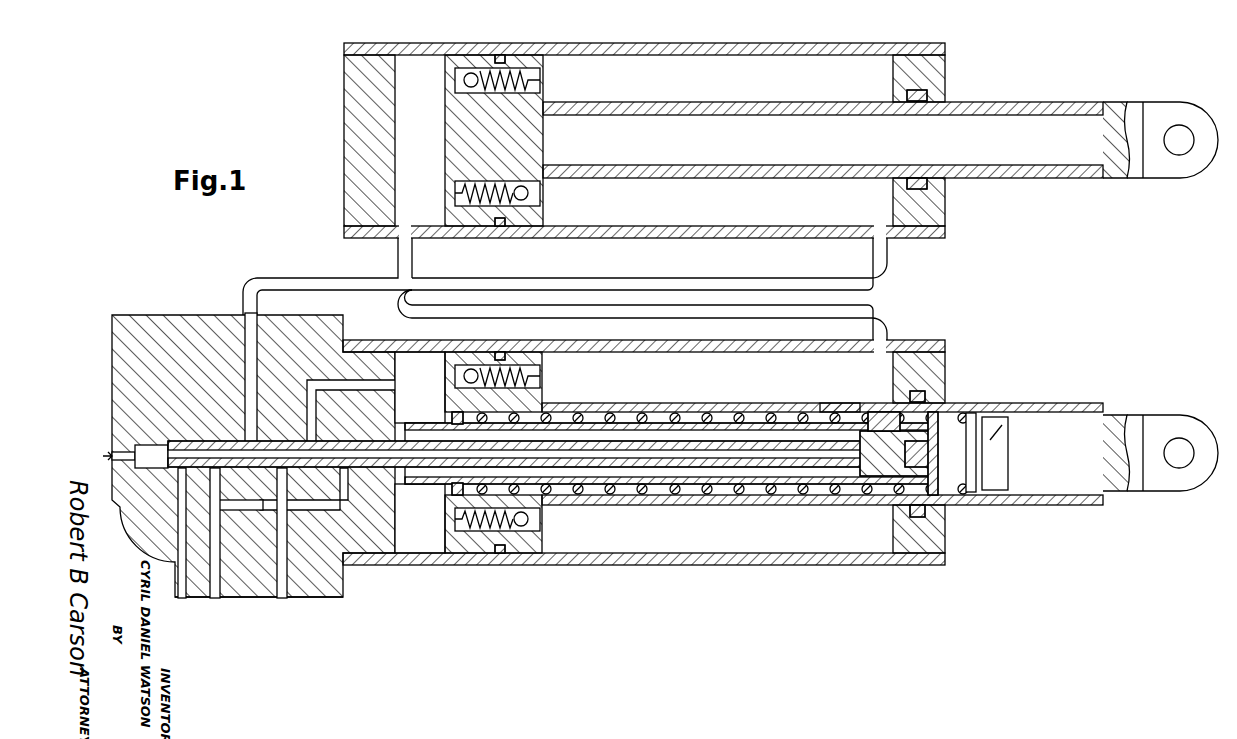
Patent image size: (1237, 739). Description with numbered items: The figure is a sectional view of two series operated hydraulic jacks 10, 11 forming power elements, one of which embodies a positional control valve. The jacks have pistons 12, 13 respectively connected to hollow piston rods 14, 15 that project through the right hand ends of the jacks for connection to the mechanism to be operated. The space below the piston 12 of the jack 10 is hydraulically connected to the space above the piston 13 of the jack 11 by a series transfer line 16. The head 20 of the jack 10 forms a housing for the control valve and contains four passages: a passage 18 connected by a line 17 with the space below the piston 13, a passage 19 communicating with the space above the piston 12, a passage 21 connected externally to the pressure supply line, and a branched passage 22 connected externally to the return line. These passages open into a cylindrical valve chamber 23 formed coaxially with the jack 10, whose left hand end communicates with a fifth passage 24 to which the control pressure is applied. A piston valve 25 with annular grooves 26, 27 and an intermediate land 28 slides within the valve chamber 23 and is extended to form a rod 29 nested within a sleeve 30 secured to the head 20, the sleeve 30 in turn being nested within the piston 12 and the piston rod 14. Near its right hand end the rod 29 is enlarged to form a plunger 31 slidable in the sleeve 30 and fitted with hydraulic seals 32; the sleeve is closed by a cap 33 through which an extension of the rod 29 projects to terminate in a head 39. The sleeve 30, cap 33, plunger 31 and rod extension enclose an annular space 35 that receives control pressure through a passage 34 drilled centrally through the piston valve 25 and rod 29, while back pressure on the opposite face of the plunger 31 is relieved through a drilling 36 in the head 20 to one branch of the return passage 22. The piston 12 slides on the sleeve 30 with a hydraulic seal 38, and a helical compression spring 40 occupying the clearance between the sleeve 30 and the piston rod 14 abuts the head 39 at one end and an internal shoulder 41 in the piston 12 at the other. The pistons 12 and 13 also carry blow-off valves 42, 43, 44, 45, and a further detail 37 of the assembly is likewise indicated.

The jack 10 is at (760, 566).
The jack 11 is at (646, 151).
The piston 12 is at (462, 402).
The piston 13 is at (447, 104).
The hollow piston rod 14 is at (1032, 498).
The hollow piston rod 15 is at (1008, 180).
The series transfer line 16 is at (888, 321).
The line 17 is at (888, 264).
The passage 18 is at (245, 342).
The passage 19 is at (355, 385).
The head 20 is at (200, 600).
The passage 21 is at (282, 598).
The branched passage 22 is at (216, 598).
The cylindrical valve chamber 23 is at (151, 456).
The fifth passage 24 is at (110, 455).
The piston valve 25 is at (180, 598).
The annular groove 26 is at (228, 470).
The annular groove 27 is at (320, 508).
The intermediate land 28 is at (253, 456).
The rod 29 is at (742, 490).
The sleeve 30 is at (603, 480).
The plunger 31 is at (879, 408).
The hydraulic seals 32 is at (870, 498).
The cap 33 is at (895, 492).
The passage 34 is at (635, 452).
The annular space 35 is at (945, 418).
The drilling 36 is at (420, 518).
The rod wall 37 is at (835, 404).
The hydraulic seal 38 is at (445, 418).
The head 39 is at (996, 430).
The helical compression spring 40 is at (690, 486).
The internal shoulder 41 is at (478, 490).
The blow-off valve 42 is at (535, 520).
The blow-off valve 43 is at (460, 377).
The blow-off valve 44 is at (530, 197).
The blow-off valve 45 is at (462, 79).